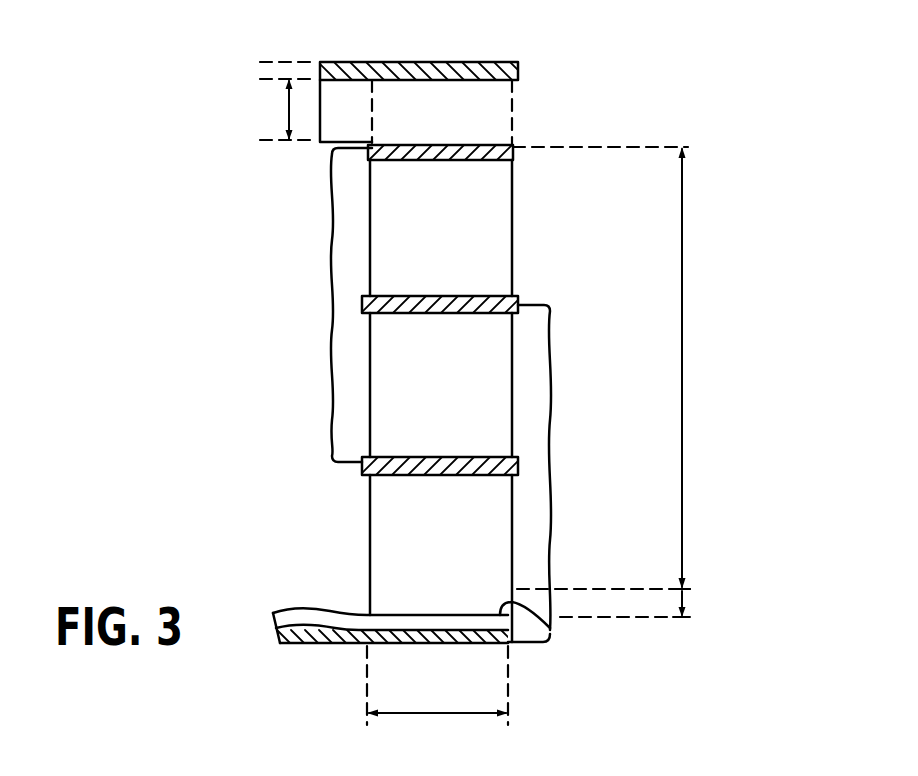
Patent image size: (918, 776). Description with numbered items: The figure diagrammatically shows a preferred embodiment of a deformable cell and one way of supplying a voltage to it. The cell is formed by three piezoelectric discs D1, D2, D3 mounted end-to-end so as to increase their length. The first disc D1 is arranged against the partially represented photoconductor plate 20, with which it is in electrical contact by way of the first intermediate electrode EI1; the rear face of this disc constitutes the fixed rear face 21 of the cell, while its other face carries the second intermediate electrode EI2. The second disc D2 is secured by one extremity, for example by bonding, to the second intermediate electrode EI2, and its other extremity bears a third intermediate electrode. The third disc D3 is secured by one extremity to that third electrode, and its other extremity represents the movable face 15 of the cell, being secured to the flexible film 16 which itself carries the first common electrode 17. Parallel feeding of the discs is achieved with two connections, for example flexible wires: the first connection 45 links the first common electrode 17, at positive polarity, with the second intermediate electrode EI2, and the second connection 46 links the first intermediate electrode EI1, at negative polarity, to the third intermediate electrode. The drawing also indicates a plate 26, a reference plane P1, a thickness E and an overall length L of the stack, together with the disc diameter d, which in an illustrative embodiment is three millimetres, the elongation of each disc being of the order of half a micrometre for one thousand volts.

The top plate 26 is at (520, 73).
The reference plane P1 is at (510, 98).
The photoconductor plate 20 is at (512, 110).
The first intermediate electrode EI1 is at (513, 147).
The fixed rear face 21 is at (500, 181).
The first piezoelectric disc D1 is at (512, 195).
The second intermediate electrode EI2 is at (510, 300).
The second piezoelectric disc D2 is at (556, 350).
The second connection 46 is at (345, 353).
The first connection 45 is at (553, 413).
The third piezoelectric disc D3 is at (365, 545).
The flexible film 16 is at (300, 606).
The first common electrode 17 is at (458, 645).
The movable face 15 is at (550, 630).
The thickness E is at (285, 104).
The length L is at (701, 368).
The diameter d is at (418, 717).